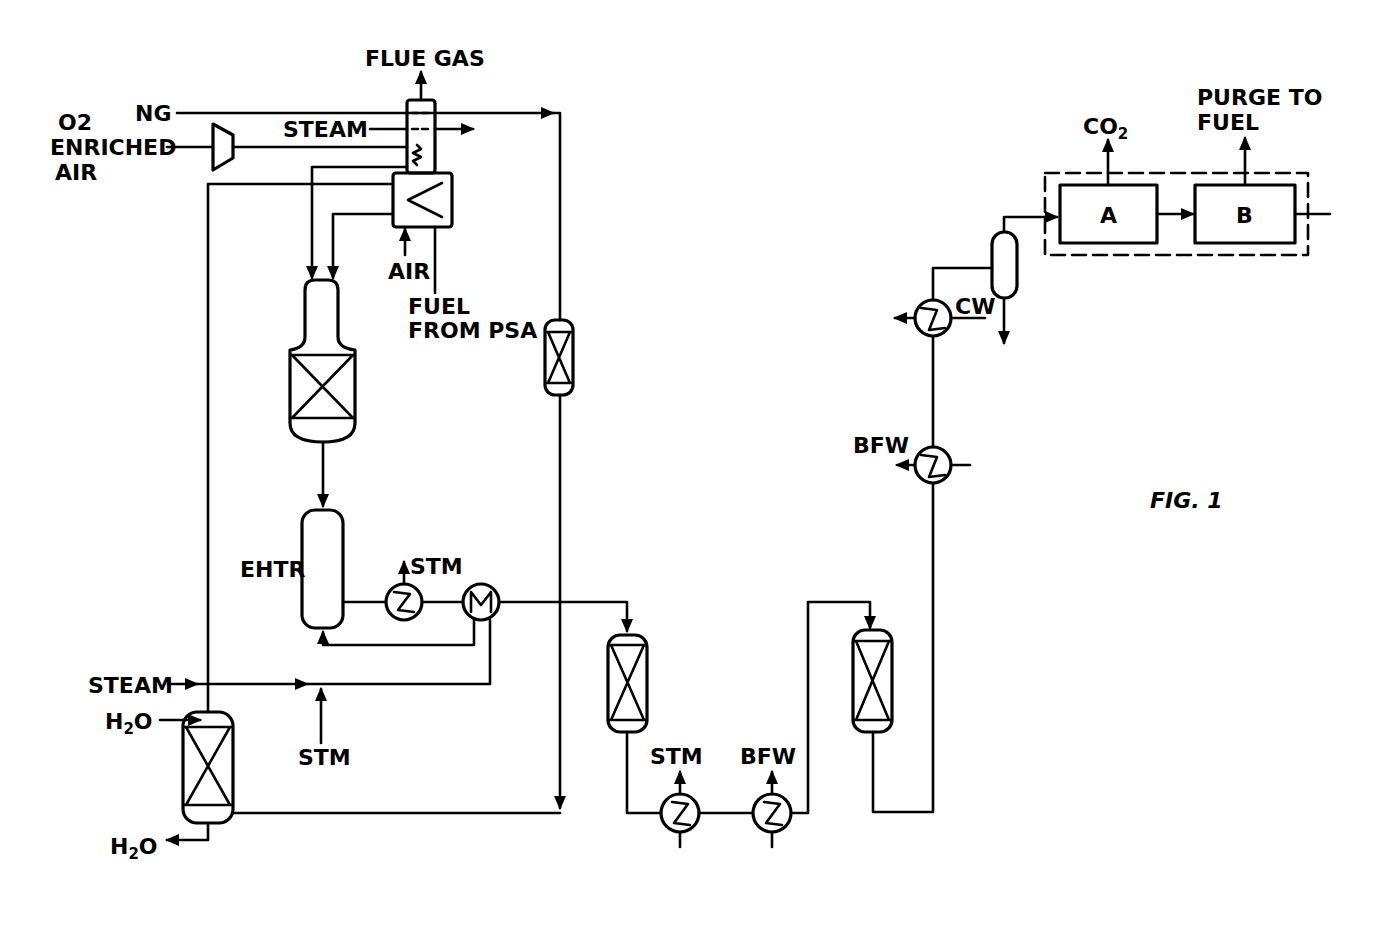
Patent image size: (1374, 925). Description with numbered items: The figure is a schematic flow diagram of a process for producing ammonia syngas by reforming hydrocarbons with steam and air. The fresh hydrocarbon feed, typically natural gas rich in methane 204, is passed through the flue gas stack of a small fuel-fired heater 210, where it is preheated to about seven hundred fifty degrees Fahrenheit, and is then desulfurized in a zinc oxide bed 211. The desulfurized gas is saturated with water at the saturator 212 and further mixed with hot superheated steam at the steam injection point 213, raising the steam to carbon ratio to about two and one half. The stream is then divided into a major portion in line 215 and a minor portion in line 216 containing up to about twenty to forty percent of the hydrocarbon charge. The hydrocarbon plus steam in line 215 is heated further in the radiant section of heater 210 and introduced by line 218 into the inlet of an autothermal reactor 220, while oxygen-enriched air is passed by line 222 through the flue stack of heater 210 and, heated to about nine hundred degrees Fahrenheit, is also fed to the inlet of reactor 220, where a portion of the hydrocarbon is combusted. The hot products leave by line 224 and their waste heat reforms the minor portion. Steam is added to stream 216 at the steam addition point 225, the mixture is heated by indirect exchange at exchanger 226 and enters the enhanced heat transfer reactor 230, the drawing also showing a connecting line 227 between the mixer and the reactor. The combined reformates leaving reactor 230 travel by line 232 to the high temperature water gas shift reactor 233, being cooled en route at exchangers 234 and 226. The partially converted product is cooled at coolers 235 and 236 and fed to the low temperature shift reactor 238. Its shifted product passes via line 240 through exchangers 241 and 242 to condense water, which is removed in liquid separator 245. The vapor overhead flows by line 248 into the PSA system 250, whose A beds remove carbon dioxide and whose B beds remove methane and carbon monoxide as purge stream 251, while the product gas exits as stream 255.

The natural gas feed 204 is at (270, 110).
The fuel-fired heater 210 is at (455, 192).
The zinc oxide bed 211 is at (575, 359).
The saturator 212 is at (182, 780).
The steam injection point 213 is at (190, 682).
The major portion line 215 is at (209, 247).
The minor portion line 216 is at (283, 688).
The heated feed line 218 is at (349, 218).
The autothermal reactor 220 is at (356, 400).
The oxygen-enriched air line 222 is at (272, 151).
The reactor effluent line 224 is at (325, 475).
The steam addition point 225 is at (324, 717).
The indirect heat exchanger 226 is at (494, 587).
The mixed steam line 227 is at (425, 648).
The enhanced heat transfer reactor 230 is at (345, 551).
The combined reformate line 232 is at (367, 607).
The high temperature water gas shift reactor 233 is at (648, 688).
The heat exchanger 234 is at (411, 618).
The cooler 235 is at (662, 825).
The cooler 236 is at (789, 828).
The low temperature shift reactor 238 is at (892, 650).
The shifted product line 240 is at (938, 618).
The heat exchanger 241 is at (922, 480).
The heat exchanger 242 is at (921, 310).
The liquid separator 245 is at (990, 262).
The PSA feed line 248 is at (1023, 212).
The PSA system 250 is at (1105, 258).
The purge stream 251 is at (1249, 166).
The product gas stream 255 is at (1328, 222).